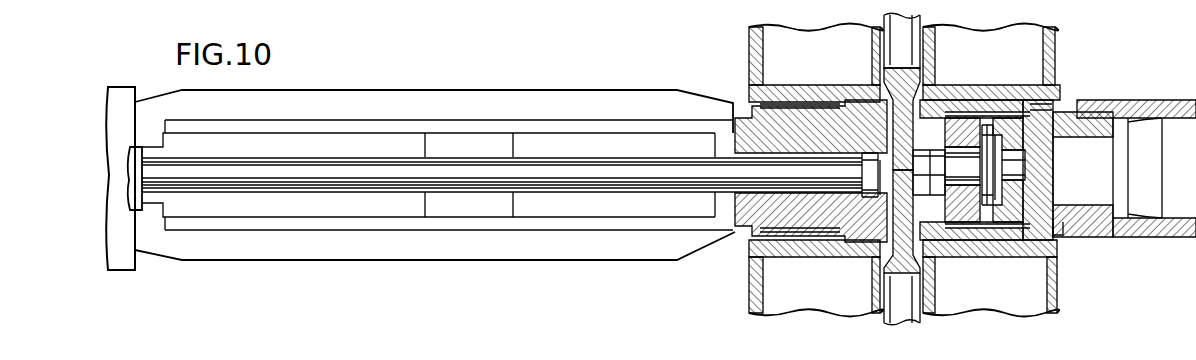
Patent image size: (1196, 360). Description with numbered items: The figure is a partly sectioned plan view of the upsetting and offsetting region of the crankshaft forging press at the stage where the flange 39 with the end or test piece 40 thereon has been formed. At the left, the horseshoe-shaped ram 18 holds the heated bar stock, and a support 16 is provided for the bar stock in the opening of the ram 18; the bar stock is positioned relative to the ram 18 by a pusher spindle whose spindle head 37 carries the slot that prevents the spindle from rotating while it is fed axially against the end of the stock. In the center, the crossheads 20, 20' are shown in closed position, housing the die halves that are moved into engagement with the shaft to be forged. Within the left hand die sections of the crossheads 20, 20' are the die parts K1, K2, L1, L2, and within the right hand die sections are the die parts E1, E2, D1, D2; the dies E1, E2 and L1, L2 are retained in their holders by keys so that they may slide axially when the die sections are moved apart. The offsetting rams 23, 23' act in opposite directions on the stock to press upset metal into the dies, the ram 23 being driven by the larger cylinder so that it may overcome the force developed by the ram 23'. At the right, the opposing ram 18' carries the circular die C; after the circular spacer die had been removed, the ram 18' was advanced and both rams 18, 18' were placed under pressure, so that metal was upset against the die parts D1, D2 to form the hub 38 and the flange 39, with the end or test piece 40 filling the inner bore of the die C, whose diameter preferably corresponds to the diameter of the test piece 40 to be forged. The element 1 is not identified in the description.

The support 16 is at (478, 147).
The ram 18 is at (435, 192).
The ram 18' is at (1136, 154).
The spindle head 37 is at (141, 252).
The die part K1 is at (745, 118).
The die part K2 is at (743, 233).
The die part L1 is at (800, 117).
The die part L2 is at (808, 232).
The crosshead 20 is at (927, 63).
The crosshead 20' is at (922, 278).
The offsetting ram 23 is at (871, 91).
The offsetting ram 23' is at (945, 247).
The die part D1 is at (970, 130).
The die part D2 is at (975, 215).
The hub 38 is at (976, 176).
The flange 39 is at (989, 140).
The circular die C is at (1026, 128).
The die part E1 is at (1008, 112).
The die part E2 is at (1060, 247).
The test piece 40 is at (1060, 118).
The spacer 1 is at (885, 195).